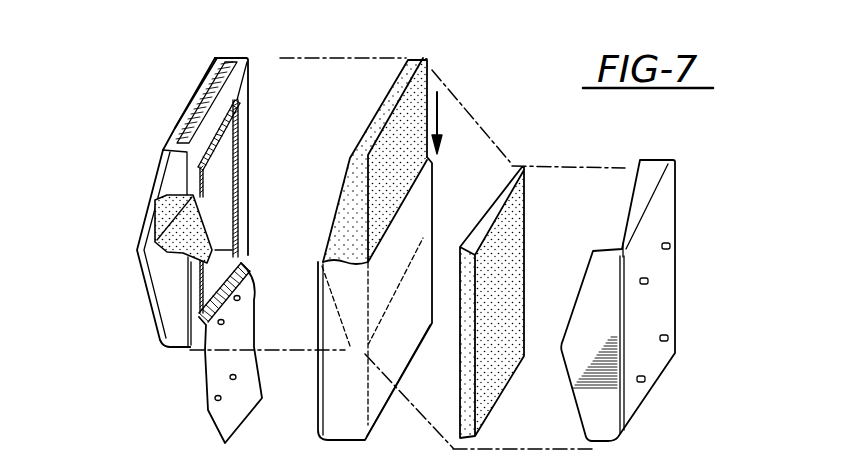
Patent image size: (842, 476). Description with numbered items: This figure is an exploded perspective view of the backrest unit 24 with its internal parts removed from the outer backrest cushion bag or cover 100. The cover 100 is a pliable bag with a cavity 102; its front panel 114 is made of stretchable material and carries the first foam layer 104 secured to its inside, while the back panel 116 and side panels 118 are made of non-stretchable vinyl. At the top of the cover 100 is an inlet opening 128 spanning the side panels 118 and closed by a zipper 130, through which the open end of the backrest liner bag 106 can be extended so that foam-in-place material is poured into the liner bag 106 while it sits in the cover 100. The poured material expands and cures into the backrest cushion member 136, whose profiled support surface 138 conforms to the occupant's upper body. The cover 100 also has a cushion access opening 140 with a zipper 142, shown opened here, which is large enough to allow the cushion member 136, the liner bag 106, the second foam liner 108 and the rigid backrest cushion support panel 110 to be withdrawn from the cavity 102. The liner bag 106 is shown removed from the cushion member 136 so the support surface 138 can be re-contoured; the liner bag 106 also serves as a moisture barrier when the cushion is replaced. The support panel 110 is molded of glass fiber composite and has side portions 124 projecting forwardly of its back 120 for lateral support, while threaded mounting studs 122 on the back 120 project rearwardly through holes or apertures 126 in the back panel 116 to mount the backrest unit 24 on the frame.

The backrest unit 24 is at (180, 88).
The backrest cushion bag or cover 100 is at (248, 108).
The cavity 102 is at (227, 157).
The first foam layer 104 is at (163, 310).
The backrest liner bag 106 is at (322, 290).
The second foam liner 108 is at (527, 222).
The backrest cushion support panel 110 is at (677, 213).
The front panel 114 is at (188, 103).
The back panel 116 is at (202, 397).
The side panels 118 is at (160, 308).
The back of the panel 120 is at (658, 308).
The threaded mounting studs 122 is at (641, 379).
The side portions 124 is at (578, 349).
The holes or apertures 126 is at (218, 398).
The inlet opening 128 is at (222, 68).
The zipper 130 is at (165, 143).
The backrest cushion member 136 is at (421, 57).
The profiled support surface 138 is at (383, 97).
The cushion access opening 140 is at (237, 197).
The zipper 142 is at (200, 317).